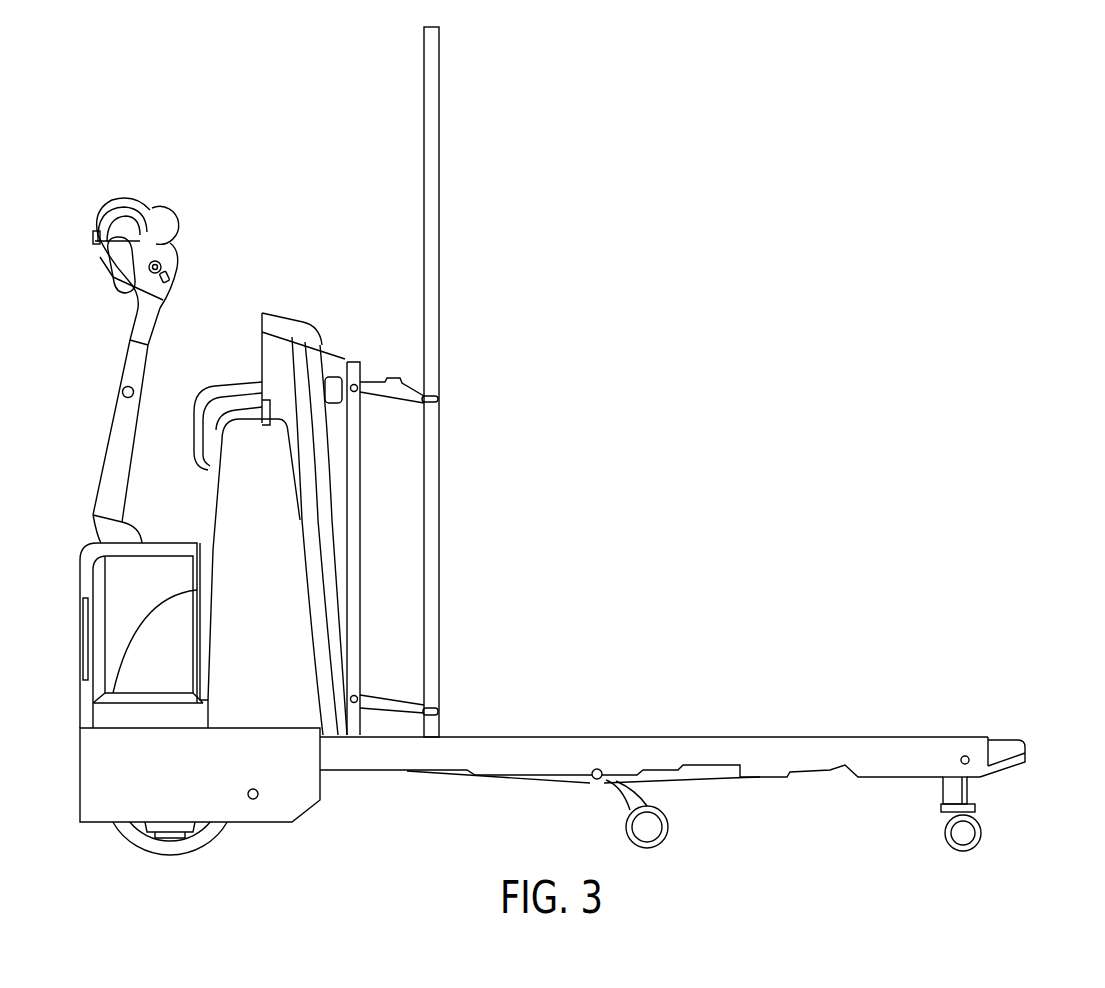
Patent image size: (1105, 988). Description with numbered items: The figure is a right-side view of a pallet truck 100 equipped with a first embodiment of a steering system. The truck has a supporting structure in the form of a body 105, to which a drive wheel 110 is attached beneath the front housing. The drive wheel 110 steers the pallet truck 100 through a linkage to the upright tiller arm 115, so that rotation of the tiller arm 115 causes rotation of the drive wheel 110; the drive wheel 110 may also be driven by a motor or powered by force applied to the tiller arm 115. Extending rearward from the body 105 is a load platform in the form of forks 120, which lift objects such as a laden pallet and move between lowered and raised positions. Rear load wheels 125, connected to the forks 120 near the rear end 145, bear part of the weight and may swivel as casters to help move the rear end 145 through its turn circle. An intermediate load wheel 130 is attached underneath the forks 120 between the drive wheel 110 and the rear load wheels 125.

The pallet truck 100 is at (672, 282).
The body 105 is at (324, 364).
The drive wheel 110 is at (130, 840).
The tiller arm 115 is at (111, 425).
The forks 120 is at (887, 737).
The rear load wheels 125 is at (984, 836).
The intermediate load wheel 130 is at (626, 836).
The rear end 145 is at (988, 768).